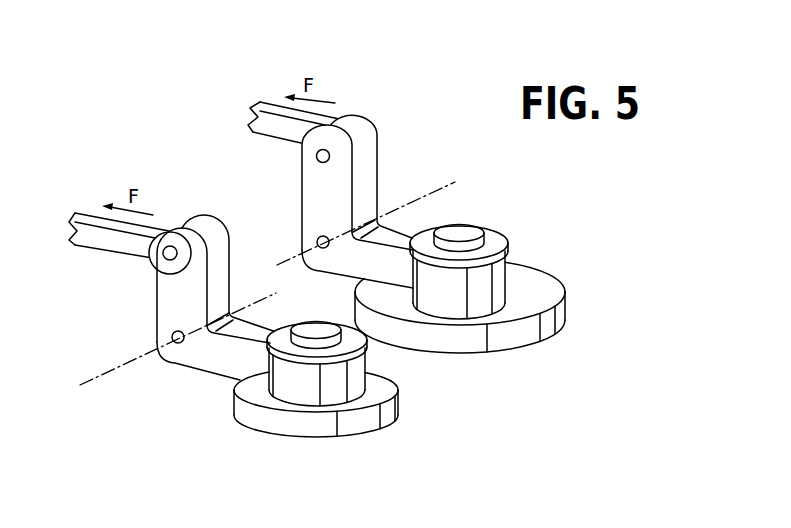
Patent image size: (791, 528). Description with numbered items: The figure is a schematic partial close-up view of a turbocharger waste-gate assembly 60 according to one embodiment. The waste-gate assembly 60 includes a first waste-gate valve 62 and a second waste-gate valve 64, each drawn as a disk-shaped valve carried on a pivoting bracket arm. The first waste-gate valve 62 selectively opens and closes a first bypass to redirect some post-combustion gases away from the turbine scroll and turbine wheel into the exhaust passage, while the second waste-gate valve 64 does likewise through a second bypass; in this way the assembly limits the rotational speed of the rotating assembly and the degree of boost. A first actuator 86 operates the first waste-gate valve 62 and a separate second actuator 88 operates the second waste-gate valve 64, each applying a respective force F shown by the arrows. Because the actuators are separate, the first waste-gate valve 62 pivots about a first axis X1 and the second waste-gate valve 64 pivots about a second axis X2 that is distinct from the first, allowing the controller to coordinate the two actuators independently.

The waste-gate assembly 60 is at (560, 249).
The first waste-gate valve 62 is at (547, 320).
The second waste-gate valve 64 is at (268, 420).
The first actuator 86 is at (322, 124).
The second actuator 88 is at (93, 213).
The first axis X1 is at (118, 362).
The second axis X2 is at (446, 183).